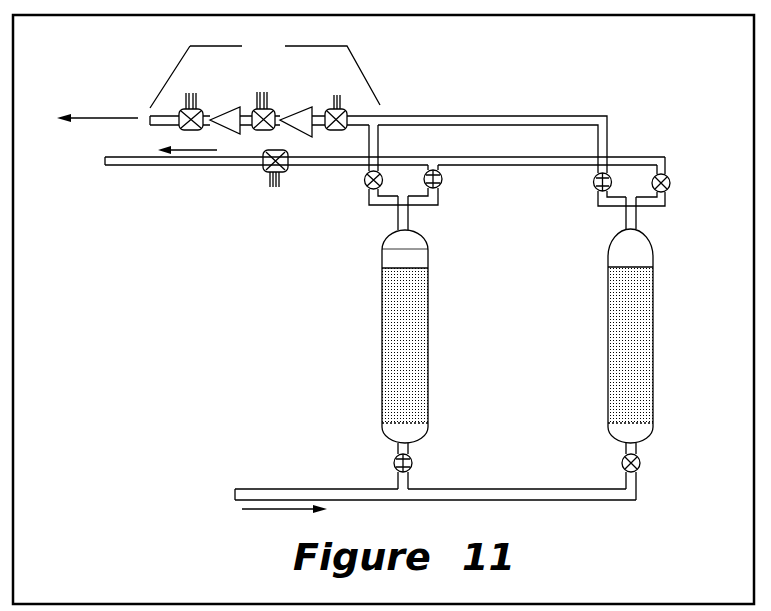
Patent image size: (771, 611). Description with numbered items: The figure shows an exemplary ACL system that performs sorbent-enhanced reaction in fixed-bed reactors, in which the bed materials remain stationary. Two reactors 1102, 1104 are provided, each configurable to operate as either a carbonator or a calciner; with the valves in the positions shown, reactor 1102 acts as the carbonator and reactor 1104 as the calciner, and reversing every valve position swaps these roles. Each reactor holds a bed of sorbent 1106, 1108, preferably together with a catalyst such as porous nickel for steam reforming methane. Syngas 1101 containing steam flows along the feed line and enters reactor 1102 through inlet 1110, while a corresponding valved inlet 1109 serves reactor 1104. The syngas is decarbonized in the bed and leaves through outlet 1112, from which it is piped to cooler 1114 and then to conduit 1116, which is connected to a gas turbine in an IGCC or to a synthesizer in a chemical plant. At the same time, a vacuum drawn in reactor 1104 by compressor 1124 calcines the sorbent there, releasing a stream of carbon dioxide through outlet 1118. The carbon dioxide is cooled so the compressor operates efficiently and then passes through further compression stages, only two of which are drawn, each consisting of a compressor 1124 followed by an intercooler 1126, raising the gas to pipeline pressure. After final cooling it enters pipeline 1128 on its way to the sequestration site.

The syngas 1101 is at (272, 488).
The reactor 1102 is at (382, 293).
The reactor 1104 is at (608, 291).
The adsorbent bed / compressor train 1106 is at (447, 356).
The adsorbent bed 1108 is at (645, 337).
The feed valve 1109 is at (622, 446).
The inlet 1110 is at (397, 447).
The outlet 1112 is at (350, 115).
The cooler 1114 is at (273, 190).
The conduit 1116 is at (195, 164).
The outlet 1118 is at (633, 228).
The compressor 1124 is at (321, 105).
The intercooler 1126 is at (261, 97).
The pipeline 1128 is at (95, 118).